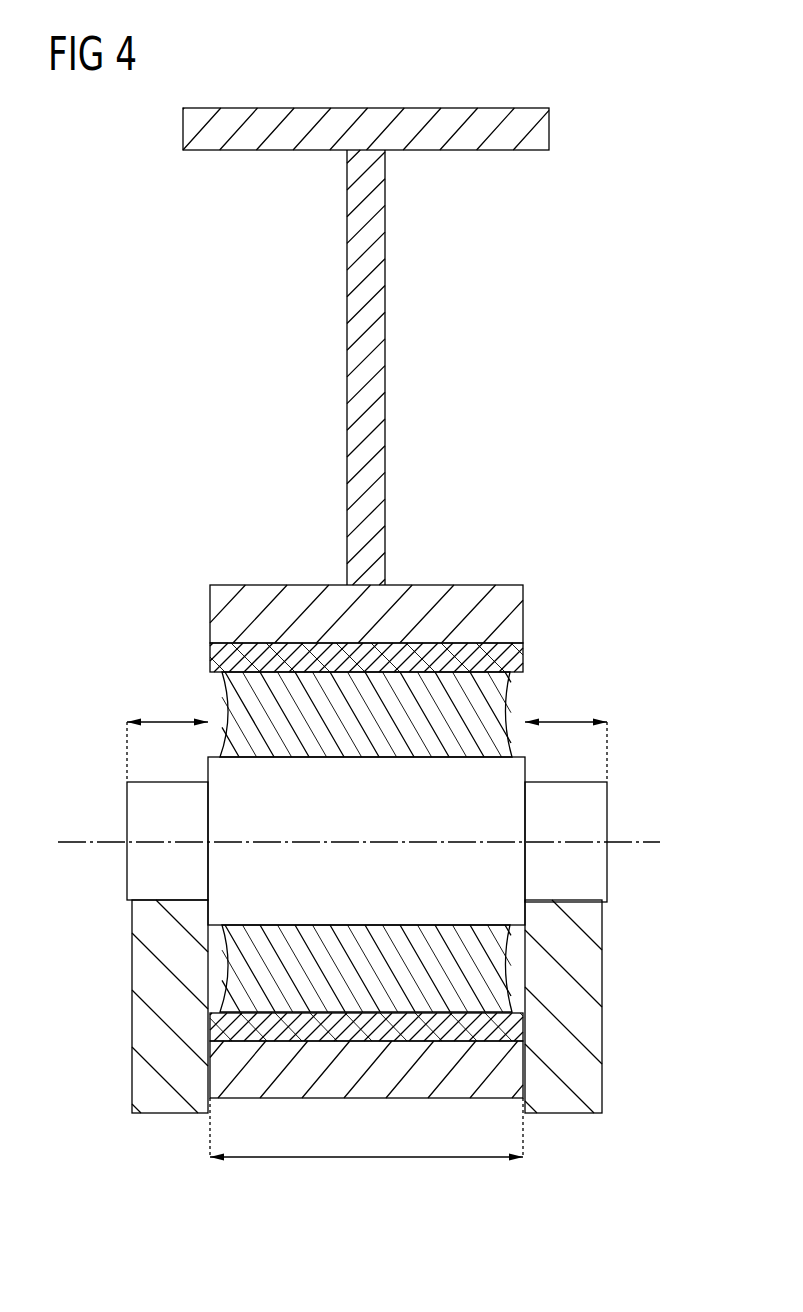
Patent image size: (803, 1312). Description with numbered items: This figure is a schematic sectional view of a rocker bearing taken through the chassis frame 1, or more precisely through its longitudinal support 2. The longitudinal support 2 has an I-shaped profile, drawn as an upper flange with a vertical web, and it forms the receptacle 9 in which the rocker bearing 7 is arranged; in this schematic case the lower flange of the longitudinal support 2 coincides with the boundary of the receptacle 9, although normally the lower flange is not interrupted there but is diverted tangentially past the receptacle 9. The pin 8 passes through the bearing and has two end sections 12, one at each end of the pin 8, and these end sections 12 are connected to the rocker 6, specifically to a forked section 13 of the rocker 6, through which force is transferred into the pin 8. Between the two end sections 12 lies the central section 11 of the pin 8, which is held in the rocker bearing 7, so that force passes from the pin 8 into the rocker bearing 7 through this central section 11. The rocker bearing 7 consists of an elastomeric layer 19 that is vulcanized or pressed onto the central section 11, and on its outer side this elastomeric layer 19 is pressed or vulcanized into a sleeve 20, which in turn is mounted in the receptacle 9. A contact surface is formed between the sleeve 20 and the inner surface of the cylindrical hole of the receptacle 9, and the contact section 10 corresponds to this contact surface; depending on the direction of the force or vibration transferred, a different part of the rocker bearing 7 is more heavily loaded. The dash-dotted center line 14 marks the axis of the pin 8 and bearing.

The chassis frame 1 is at (366, 632).
The longitudinal support 2 is at (386, 318).
The rocker 6 is at (372, 1006).
The rocker bearing 7 is at (247, 970).
The pin 8 is at (135, 878).
The receptacle 9 is at (467, 600).
The contact section 10 is at (367, 1160).
The central section 11 is at (208, 818).
The end sections 12 is at (168, 722).
The forked section 13 is at (140, 1015).
The axis 14 is at (80, 842).
The elastomeric layer 19 is at (504, 700).
The sleeve 20 is at (524, 652).